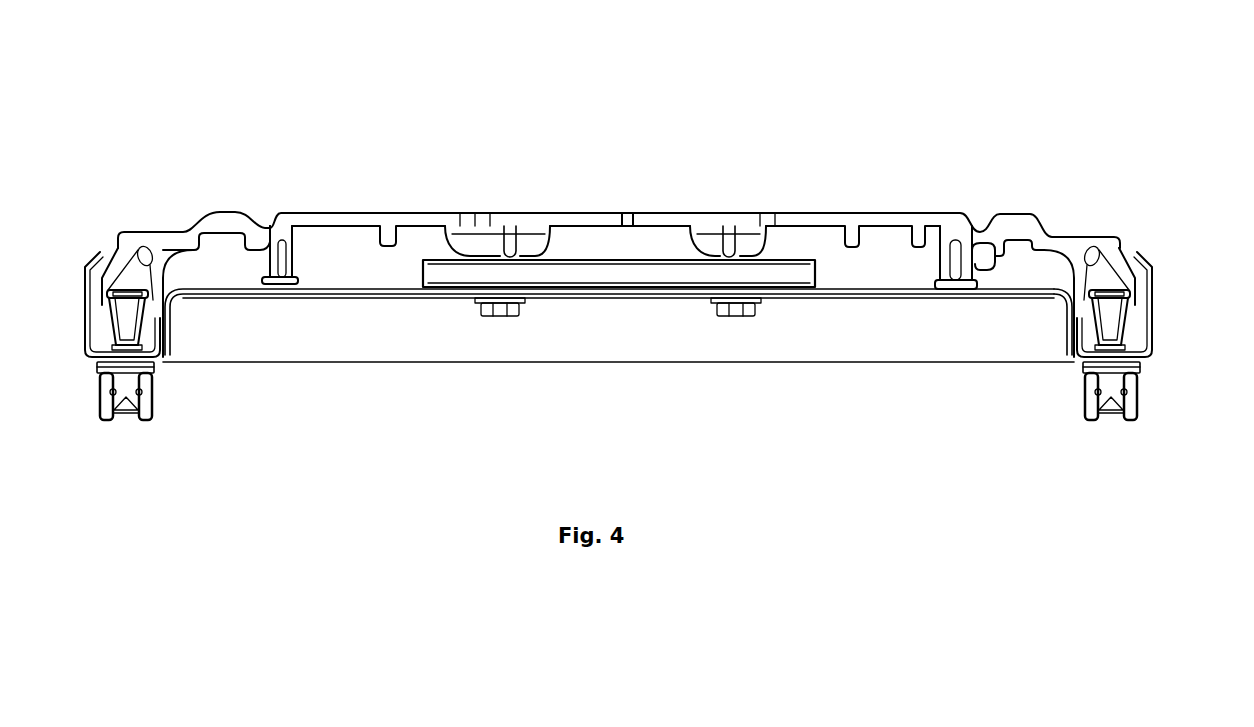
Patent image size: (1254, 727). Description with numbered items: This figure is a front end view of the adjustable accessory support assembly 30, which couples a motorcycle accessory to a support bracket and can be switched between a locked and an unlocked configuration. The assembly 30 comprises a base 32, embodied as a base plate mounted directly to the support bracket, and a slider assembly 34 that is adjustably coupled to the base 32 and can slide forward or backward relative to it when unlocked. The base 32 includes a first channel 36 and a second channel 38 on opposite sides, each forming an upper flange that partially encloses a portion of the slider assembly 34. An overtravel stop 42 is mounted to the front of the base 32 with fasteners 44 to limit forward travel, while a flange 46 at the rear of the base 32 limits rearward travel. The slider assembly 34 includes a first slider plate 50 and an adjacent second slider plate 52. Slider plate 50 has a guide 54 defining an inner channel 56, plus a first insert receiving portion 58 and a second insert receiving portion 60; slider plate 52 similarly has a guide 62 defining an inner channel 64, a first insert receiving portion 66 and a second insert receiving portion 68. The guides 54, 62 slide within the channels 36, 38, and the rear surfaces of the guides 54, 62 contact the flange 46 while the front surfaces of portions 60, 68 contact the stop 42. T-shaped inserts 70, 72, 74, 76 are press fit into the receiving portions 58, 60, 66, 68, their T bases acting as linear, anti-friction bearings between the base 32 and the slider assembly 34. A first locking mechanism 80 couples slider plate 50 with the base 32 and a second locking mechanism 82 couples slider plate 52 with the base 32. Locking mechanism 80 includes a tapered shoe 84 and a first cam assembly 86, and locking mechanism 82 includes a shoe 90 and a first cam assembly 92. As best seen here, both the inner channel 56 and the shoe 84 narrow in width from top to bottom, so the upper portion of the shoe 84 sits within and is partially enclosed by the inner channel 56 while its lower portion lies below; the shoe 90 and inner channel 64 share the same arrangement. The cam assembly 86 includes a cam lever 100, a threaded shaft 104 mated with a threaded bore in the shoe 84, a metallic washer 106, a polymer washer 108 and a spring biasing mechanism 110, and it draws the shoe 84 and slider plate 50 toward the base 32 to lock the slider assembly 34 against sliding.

The adjustable accessory support assembly 30 is at (513, 84).
The base 32 is at (862, 300).
The slider assembly 34 is at (630, 215).
The first channel 36 is at (1160, 320).
The second channel 38 is at (92, 342).
The overtravel stop 42 is at (582, 275).
The fasteners 44 is at (500, 318).
The flange 46 is at (938, 336).
The first slider plate 50 is at (873, 213).
The second slider plate 52 is at (386, 212).
The guide 54 is at (1138, 258).
The inner channel 56 is at (1092, 252).
The first insert receiving portion 58 is at (983, 258).
The second insert receiving portion 60 is at (700, 245).
The guide 62 is at (118, 240).
The inner channel 64 is at (127, 290).
The first insert receiving portion 66 is at (283, 270).
The second insert receiving portion 68 is at (546, 240).
The T-shaped insert 70 is at (958, 289).
The T-shaped insert 72 is at (748, 252).
The T-shaped insert 74 is at (285, 285).
The T-shaped insert 76 is at (505, 252).
The first locking mechanism 80 is at (1218, 300).
The second locking mechanism 82 is at (30, 300).
The shoe 84 is at (1107, 292).
The first cam assembly 86 is at (1119, 436).
The shoe 90 is at (125, 343).
The first cam assembly 92 is at (122, 423).
The cam lever 100 is at (1090, 410).
The threaded shaft 104 is at (1138, 403).
The metallic washer 106 is at (1088, 378).
The polymer washer 108 is at (1112, 423).
The biasing mechanism 110 is at (1150, 356).